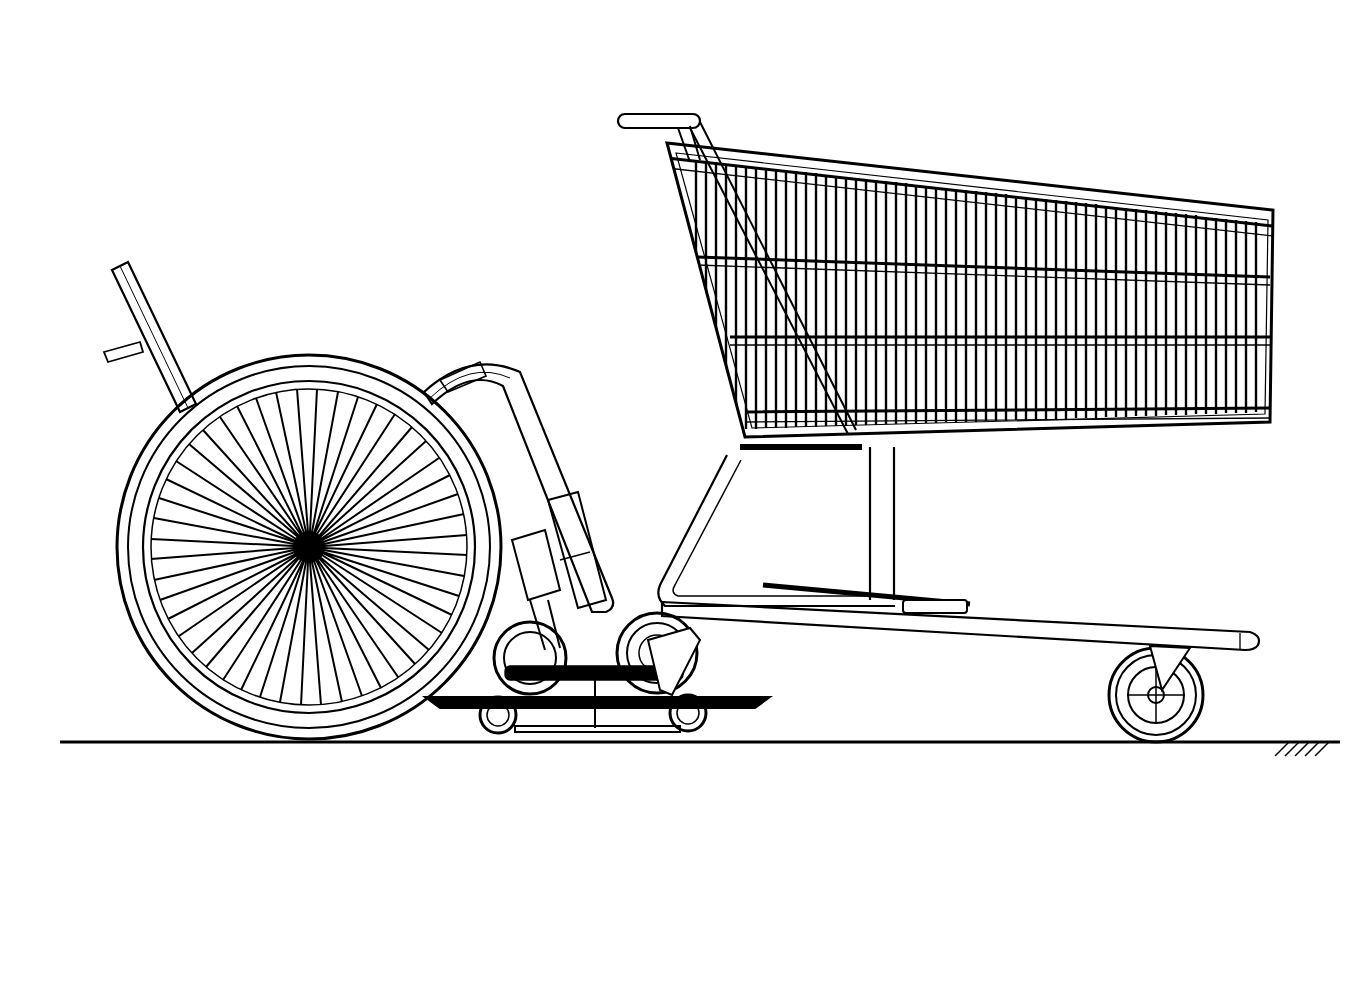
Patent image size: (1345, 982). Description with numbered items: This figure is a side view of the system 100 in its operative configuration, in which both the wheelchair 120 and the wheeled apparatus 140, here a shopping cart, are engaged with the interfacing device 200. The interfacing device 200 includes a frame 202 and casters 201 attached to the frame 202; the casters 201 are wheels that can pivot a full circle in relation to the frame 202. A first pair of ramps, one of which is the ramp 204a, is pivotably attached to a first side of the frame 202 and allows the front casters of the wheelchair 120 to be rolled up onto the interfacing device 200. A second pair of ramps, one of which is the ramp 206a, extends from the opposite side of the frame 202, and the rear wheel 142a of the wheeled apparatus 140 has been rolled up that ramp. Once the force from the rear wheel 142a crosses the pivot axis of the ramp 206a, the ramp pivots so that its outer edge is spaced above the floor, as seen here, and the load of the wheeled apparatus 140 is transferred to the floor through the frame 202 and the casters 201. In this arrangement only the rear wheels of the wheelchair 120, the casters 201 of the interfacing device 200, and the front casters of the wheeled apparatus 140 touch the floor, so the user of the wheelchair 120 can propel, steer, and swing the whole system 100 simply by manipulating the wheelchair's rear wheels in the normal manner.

The system 100 is at (292, 128).
The wheelchair 120 is at (312, 348).
The wheeled apparatus 140 is at (1005, 160).
The rear wheel 142a is at (707, 652).
The interfacing device 200 is at (590, 750).
The caster 201 is at (712, 730).
The frame 202 is at (620, 645).
The ramp 204a is at (448, 704).
The ramp 206a is at (758, 705).